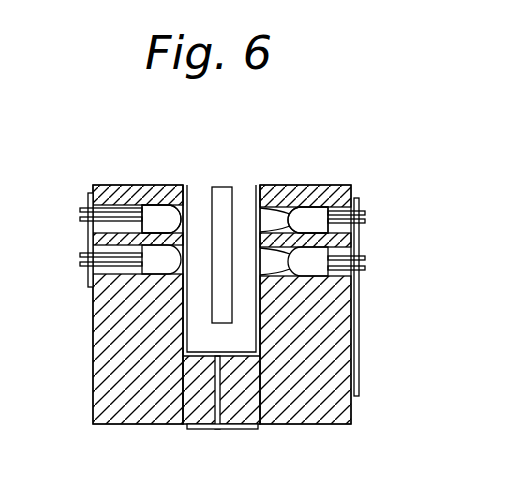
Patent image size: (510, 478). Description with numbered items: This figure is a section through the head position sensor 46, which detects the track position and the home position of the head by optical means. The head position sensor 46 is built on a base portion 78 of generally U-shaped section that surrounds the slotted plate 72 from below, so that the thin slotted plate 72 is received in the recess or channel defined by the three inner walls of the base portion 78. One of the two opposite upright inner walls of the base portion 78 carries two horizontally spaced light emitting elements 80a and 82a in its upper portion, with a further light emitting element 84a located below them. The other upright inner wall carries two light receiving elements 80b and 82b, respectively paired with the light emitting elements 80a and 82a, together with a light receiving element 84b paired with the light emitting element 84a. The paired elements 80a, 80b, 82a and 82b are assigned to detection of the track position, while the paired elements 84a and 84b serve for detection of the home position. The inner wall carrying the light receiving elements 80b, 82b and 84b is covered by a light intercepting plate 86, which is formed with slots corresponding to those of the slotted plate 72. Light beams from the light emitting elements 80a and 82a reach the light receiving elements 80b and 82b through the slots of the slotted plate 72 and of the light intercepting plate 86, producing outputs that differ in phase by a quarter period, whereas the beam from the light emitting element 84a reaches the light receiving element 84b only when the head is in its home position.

The head position sensor 46 is at (408, 209).
The slotted plate 72 is at (223, 198).
The base portion 78 is at (333, 408).
The light emitting element 80a is at (315, 212).
The light emitting element 82a is at (308, 220).
The light receiving element 80b is at (150, 214).
The light receiving element 82b is at (161, 219).
The light emitting element 84a is at (312, 272).
The light receiving element 84b is at (152, 267).
The light intercepting plate 86 is at (193, 205).